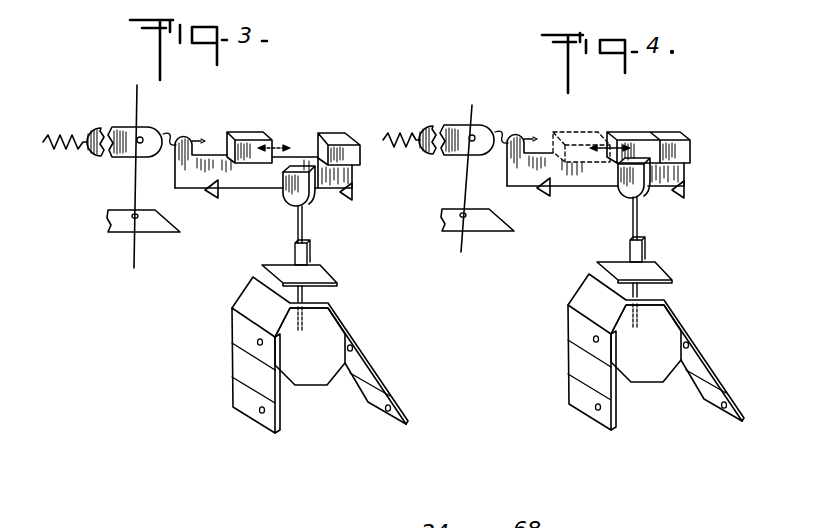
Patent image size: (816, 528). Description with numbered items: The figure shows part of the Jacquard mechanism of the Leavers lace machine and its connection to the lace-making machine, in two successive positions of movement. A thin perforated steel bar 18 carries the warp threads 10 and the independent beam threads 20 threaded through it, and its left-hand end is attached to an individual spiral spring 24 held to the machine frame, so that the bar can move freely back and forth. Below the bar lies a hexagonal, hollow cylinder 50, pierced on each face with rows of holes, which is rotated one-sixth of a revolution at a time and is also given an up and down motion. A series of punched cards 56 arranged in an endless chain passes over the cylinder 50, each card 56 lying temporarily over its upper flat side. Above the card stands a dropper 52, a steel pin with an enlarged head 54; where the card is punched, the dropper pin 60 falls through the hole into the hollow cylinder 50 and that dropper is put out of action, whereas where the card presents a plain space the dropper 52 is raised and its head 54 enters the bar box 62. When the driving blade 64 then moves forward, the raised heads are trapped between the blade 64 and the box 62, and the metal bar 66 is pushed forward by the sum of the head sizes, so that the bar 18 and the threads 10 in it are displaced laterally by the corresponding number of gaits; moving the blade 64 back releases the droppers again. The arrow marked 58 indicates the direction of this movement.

In FIG. 3, the warp threads 10 is at (135, 177).
In FIG. 4, the warp threads 10 is at (468, 163).
In FIG. 3, the steel bar 18 is at (127, 128).
In FIG. 3, the independent beam threads 20 is at (157, 222).
In FIG. 4, the independent beam threads 20 is at (490, 223).
In FIG. 3, the spiral spring 24 is at (43, 142).
In FIG. 4, the spiral spring 24 is at (385, 140).
In FIG. 3, the cylinder 50 is at (330, 370).
In FIG. 4, the cylinder 50 is at (648, 372).
In FIG. 3, the dropper 52 is at (303, 233).
In FIG. 4, the dropper 52 is at (638, 228).
In FIG. 3, the enlarged head 54 is at (313, 205).
In FIG. 4, the enlarged head 54 is at (643, 200).
In FIG. 3, the card 56 is at (242, 355).
In FIG. 3, the direction arrow 58 is at (312, 391).
In FIG. 3, the dropper pin 60 is at (313, 291).
In FIG. 3, the bar box 62 is at (341, 133).
In FIG. 3, the driving blade 64 is at (255, 132).
In FIG. 3, the metal bar 66 is at (352, 177).
In FIG. 4, the metal bar 66 is at (674, 174).